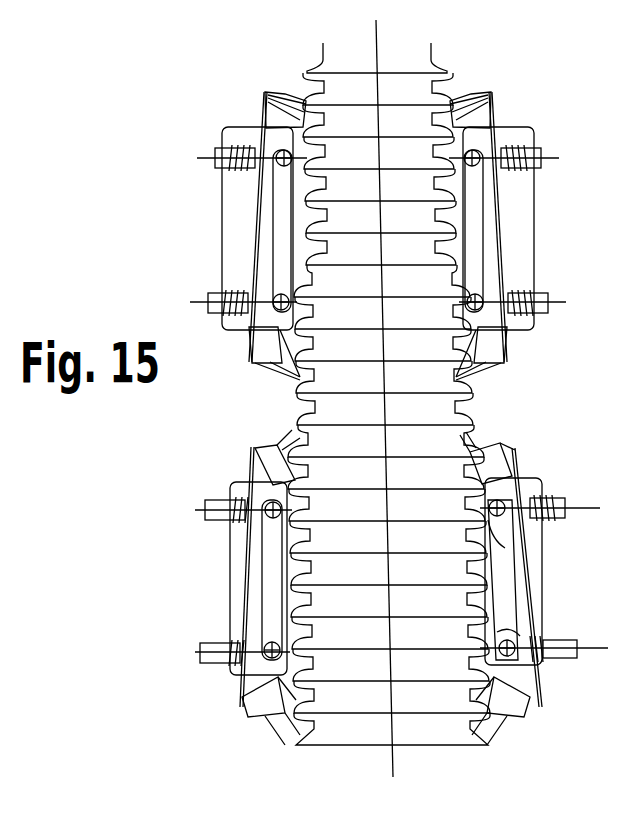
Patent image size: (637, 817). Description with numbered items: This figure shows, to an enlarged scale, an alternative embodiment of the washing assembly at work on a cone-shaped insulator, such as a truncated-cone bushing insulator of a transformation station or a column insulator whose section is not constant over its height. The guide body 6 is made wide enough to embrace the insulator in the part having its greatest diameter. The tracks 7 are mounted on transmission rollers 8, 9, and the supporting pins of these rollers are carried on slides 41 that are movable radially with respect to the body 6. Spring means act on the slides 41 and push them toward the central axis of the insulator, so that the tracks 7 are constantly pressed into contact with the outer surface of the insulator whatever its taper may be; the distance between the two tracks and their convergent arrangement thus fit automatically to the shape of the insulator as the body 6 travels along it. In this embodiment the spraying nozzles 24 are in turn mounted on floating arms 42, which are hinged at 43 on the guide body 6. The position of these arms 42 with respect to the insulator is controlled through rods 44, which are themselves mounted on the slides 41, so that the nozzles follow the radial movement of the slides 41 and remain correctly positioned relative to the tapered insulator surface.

The guide body 6 is at (545, 565).
The tracks 7 is at (516, 594).
The transmission roller 8 is at (540, 632).
The transmission roller 9 is at (543, 538).
The spraying nozzles 24 is at (487, 443).
The slides 41 is at (560, 498).
The floating arms 42 is at (507, 445).
The hinge 43 is at (514, 462).
The rods 44 is at (535, 618).